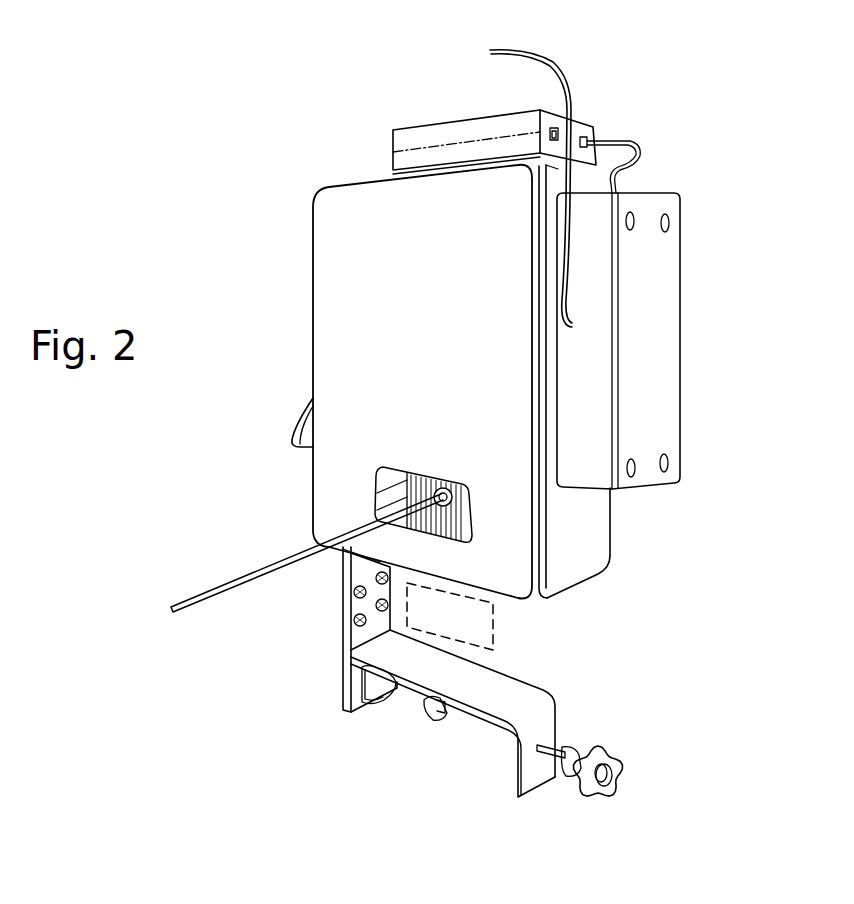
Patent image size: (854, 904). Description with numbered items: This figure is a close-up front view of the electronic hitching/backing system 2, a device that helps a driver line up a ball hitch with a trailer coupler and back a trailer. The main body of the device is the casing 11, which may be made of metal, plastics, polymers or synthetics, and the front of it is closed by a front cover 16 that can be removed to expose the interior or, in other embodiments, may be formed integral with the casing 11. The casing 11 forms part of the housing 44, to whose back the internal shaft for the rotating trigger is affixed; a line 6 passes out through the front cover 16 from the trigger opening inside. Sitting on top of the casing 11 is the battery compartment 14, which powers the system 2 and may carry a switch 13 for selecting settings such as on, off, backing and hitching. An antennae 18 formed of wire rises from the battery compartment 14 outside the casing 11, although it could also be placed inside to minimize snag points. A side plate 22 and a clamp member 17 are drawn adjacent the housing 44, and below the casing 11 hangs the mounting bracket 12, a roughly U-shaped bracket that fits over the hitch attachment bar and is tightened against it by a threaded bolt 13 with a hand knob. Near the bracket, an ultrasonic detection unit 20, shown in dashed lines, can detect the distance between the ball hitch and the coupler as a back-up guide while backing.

The electronic hitching/backing system 2 is at (313, 175).
The line 6 is at (248, 580).
The casing 11 is at (313, 262).
The mounting bracket 12 is at (350, 718).
The threaded bolt 13 is at (523, 113).
The battery compartment 14 is at (427, 125).
The front cover 16 is at (392, 362).
The clamp 17 is at (483, 733).
The antennae 18 is at (562, 70).
The ultrasonic detection unit 20 is at (487, 623).
The mounting bracket plate 22 is at (663, 317).
The housing 44 is at (593, 513).